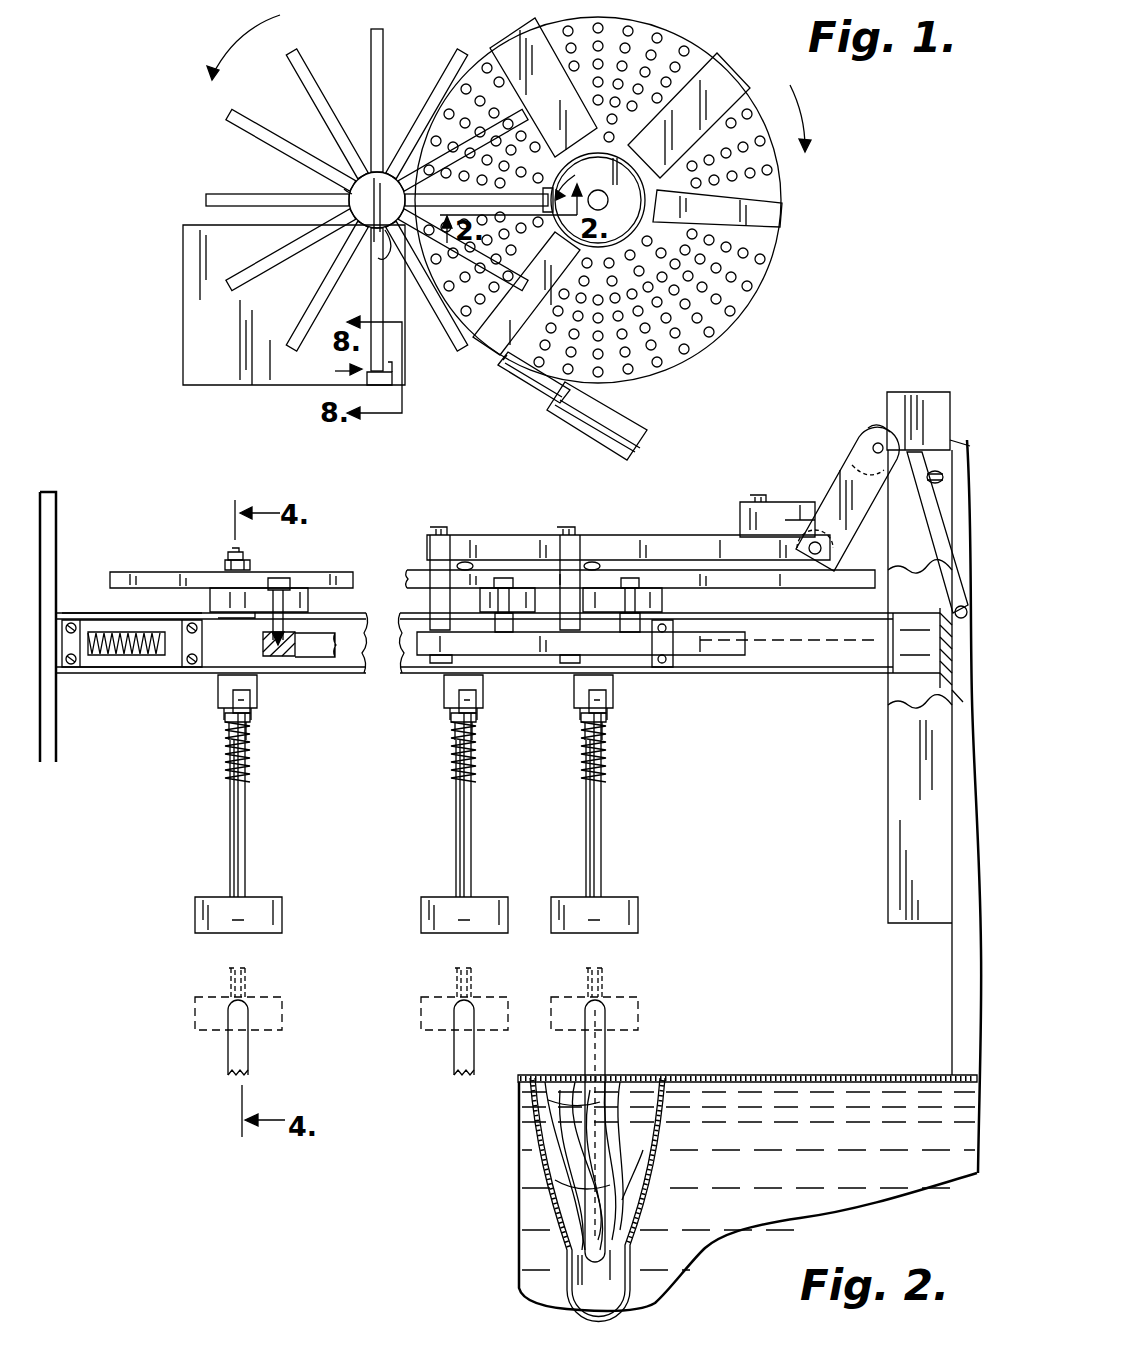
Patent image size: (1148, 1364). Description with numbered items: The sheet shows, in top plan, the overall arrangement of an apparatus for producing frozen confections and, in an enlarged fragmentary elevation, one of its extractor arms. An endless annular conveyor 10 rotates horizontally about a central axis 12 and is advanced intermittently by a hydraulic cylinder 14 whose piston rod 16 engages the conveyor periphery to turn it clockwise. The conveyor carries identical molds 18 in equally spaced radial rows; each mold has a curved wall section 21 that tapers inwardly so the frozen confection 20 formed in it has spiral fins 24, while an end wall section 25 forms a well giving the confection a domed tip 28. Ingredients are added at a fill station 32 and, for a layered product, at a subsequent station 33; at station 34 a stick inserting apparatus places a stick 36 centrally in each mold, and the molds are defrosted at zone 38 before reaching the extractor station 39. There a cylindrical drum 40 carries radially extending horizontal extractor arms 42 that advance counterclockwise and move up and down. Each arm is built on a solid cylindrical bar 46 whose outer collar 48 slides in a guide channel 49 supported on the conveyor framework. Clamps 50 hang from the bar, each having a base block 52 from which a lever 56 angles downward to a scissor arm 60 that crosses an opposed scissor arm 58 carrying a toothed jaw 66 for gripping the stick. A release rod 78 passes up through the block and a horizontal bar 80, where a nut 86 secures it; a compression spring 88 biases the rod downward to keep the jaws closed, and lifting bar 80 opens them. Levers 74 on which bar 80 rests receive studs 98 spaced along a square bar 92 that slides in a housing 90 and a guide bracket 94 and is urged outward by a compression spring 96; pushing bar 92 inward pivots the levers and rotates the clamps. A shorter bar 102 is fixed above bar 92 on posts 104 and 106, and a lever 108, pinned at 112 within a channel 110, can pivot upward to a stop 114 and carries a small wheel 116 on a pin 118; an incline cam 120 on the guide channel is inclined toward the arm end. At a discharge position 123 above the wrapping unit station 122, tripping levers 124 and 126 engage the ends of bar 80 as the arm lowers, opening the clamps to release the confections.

In FIG. 1, the endless annular conveyor 10 is at (690, 48).
In FIG. 2, the endless annular conveyor 10 is at (796, 1074).
In FIG. 1, the central axis 12 is at (605, 193).
In FIG. 1, the hydraulic cylinder 14 is at (573, 422).
In FIG. 1, the piston rod 16 is at (540, 385).
In FIG. 1, the molds 18 is at (503, 105).
In FIG. 2, the molds 18 is at (655, 1141).
In FIG. 2, the frozen confection 20 is at (605, 1085).
In FIG. 2, the curved wall section 21 is at (645, 1205).
In FIG. 2, the spiral fins 24 is at (568, 1105).
In FIG. 2, the end wall section 25 is at (626, 1262).
In FIG. 2, the domed tip 28 is at (583, 1262).
In FIG. 1, the fill station 32 is at (510, 42).
In FIG. 1, the subsequent ingredient station 33 is at (732, 78).
In FIG. 1, the stick inserting station 34 is at (783, 214).
In FIG. 2, the stick 36 is at (585, 1052).
In FIG. 1, the defrost zone 38 is at (482, 344).
In FIG. 1, the extractor station 39 is at (577, 179).
In FIG. 1, the cylindrical drum 40 is at (352, 194).
In FIG. 2, the cylindrical drum 40 is at (58, 532).
In FIG. 1, the extractor arms 42 is at (373, 52).
In FIG. 2, the extractor arms 42 is at (737, 712).
In FIG. 2, the solid cylindrical bar 46 is at (368, 668).
In FIG. 2, the enlarged collar 48 is at (905, 672).
In FIG. 2, the guide channel 49 is at (896, 735).
In FIG. 2, the clamps 50 is at (572, 790).
In FIG. 2, the rectangular base block 52 is at (578, 688).
In FIG. 2, the lever 56 is at (606, 707).
In FIG. 2, the scissor arm 58 is at (585, 827).
In FIG. 2, the scissor arm 60 is at (603, 827).
In FIG. 2, the transverse jaw 66 is at (639, 1008).
In FIG. 2, the levers 74 is at (215, 600).
In FIG. 2, the release rod 78 is at (243, 553).
In FIG. 2, the horizontal bar 80 is at (180, 568).
In FIG. 2, the nut 86 is at (251, 566).
In FIG. 2, the compression spring 88 is at (610, 748).
In FIG. 2, the rectangular housing 90 is at (117, 662).
In FIG. 2, the elongate square bar 92 is at (537, 650).
In FIG. 2, the guide bracket 94 is at (675, 642).
In FIG. 2, the compression spring 96 is at (125, 630).
In FIG. 2, the cylindrical studs 98 is at (265, 635).
In FIG. 2, the shorter bar 102 is at (517, 523).
In FIG. 2, the vertical post 104 is at (440, 562).
In FIG. 2, the vertical post 106 is at (570, 560).
In FIG. 2, the lever 108 is at (855, 470).
In FIG. 2, the channel 110 is at (838, 540).
In FIG. 2, the pin 112 is at (808, 548).
In FIG. 2, the stop 114 is at (783, 500).
In FIG. 2, the small wheel 116 is at (878, 425).
In FIG. 2, the pin 118 is at (868, 446).
In FIG. 2, the incline cam 120 is at (915, 450).
In FIG. 1, the wrapping unit station 122 is at (193, 352).
In FIG. 1, the discharge position 123 is at (333, 373).
In FIG. 1, the tripping lever 124 is at (393, 368).
In FIG. 1, the tripping lever 126 is at (387, 253).